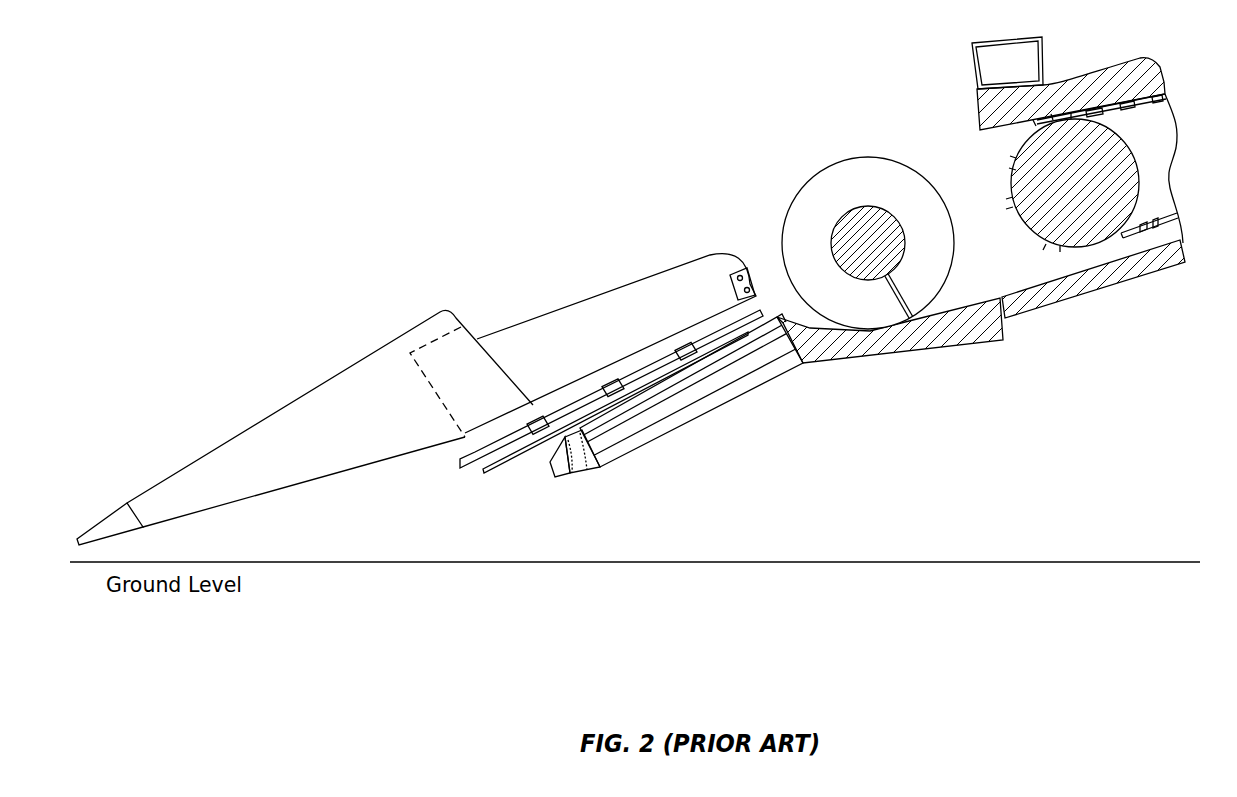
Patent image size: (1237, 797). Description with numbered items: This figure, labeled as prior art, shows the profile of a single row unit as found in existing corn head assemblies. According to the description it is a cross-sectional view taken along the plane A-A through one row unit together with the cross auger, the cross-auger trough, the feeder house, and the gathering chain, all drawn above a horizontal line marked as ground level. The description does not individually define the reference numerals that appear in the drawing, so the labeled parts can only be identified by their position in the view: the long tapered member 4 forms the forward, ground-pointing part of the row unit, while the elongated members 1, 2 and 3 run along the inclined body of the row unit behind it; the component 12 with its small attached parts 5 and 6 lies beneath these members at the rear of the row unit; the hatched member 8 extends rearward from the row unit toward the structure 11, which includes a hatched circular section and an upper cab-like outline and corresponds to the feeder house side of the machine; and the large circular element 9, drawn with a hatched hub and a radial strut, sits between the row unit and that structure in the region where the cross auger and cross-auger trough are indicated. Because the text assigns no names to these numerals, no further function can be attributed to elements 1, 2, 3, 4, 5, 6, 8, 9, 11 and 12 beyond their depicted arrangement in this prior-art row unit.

The missile 1 is at (687, 345).
The launch rail 2 is at (638, 378).
The guide rod 3 is at (507, 462).
The fin 4 is at (273, 417).
The nozzle collar 5 is at (581, 475).
The nozzle 6 is at (562, 478).
The launch platform 8 is at (983, 300).
The wheel 9 is at (814, 183).
The towing vehicle 11 is at (988, 156).
The rocket motor 12 is at (640, 451).